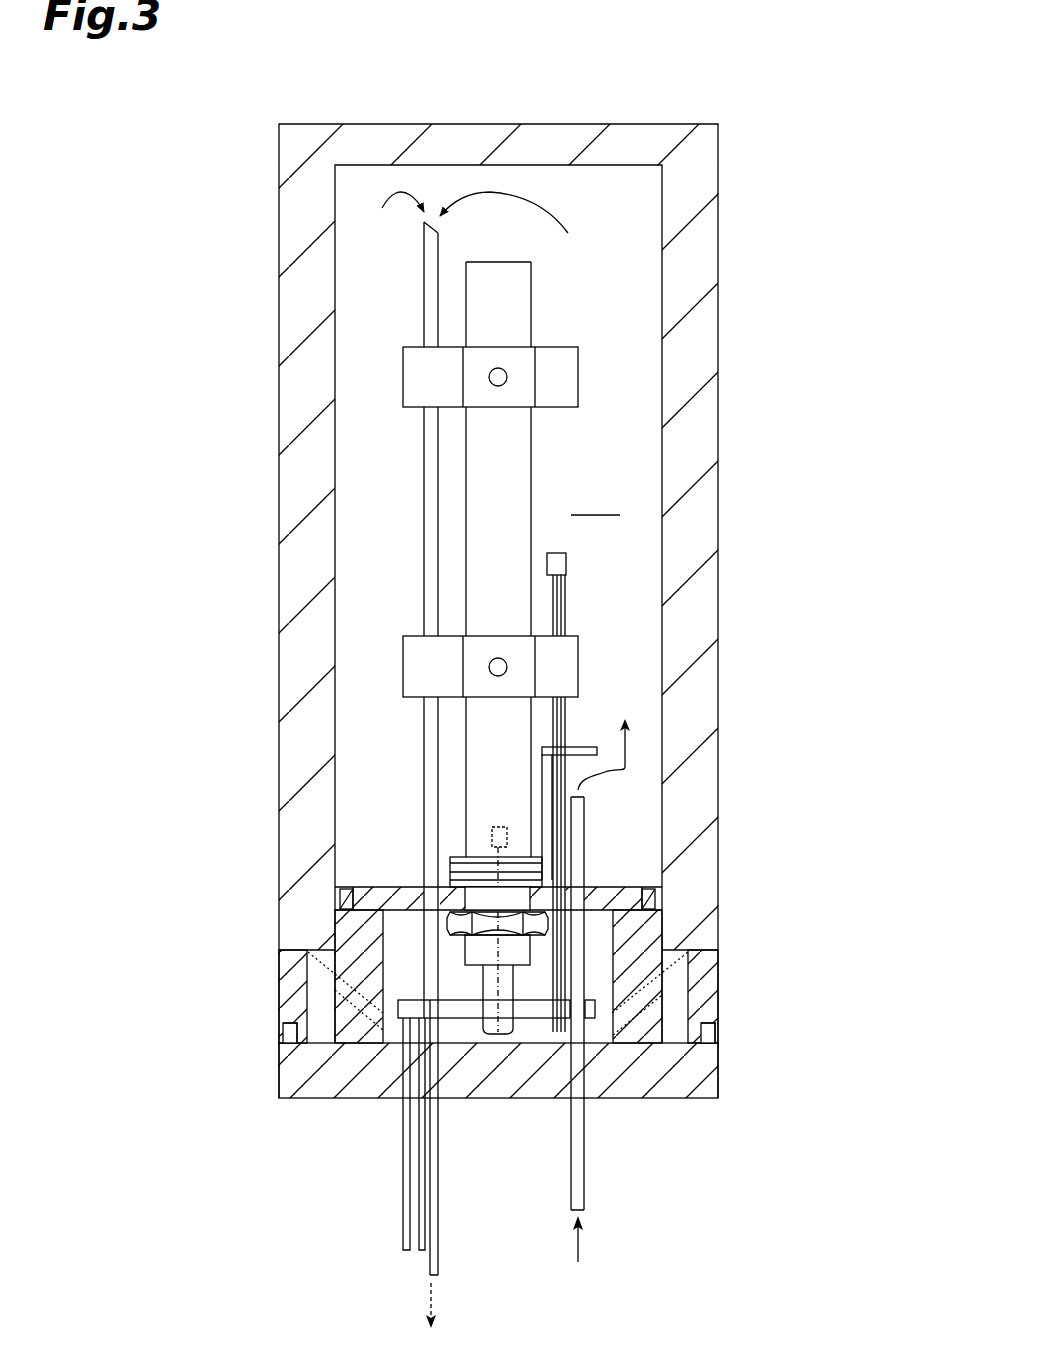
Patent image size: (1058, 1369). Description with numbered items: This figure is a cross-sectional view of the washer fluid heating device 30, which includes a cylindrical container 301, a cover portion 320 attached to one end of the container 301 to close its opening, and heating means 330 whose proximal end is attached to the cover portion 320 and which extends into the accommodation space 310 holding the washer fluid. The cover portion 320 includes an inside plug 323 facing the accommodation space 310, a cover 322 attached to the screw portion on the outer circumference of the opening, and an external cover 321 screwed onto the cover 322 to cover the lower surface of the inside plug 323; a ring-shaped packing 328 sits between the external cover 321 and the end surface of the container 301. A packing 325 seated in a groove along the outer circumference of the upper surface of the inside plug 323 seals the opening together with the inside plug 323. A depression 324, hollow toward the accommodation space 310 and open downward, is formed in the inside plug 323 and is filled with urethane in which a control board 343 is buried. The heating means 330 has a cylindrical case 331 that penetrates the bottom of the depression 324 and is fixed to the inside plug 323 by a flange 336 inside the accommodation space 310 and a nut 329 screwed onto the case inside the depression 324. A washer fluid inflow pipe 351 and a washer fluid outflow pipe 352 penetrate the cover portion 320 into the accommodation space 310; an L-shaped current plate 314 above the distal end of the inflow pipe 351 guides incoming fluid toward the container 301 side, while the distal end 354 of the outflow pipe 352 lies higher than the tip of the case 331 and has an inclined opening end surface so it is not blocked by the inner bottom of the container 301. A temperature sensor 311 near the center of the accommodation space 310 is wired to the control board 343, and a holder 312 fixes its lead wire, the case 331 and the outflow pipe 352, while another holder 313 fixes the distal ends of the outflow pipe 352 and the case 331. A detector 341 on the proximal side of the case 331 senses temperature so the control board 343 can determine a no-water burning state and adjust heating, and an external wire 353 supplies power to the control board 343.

The washer fluid heating device 30 is at (742, 65).
The container 301 is at (720, 213).
The accommodation space 310 is at (611, 647).
The temperature sensor 311 is at (567, 563).
The holder 312 is at (580, 662).
The holder 313 is at (580, 366).
The current plate 314 is at (582, 746).
The cover portion 320 is at (536, 955).
The external cover 321 is at (719, 1052).
The cover 322 is at (719, 973).
The inside plug 323 is at (655, 948).
The depression 324 is at (498, 879).
The packing 325 is at (350, 893).
The packing 328 is at (290, 1034).
The nut 329 is at (450, 920).
The heating means 330 is at (536, 302).
The case 331 is at (533, 462).
The flange 336 is at (450, 862).
The detector 341 is at (492, 836).
The control board 343 is at (398, 1012).
The washer fluid inflow pipe 351 is at (586, 817).
The washer fluid outflow pipe 352 is at (424, 782).
The external wire 353 is at (419, 1215).
The distal end 354 is at (424, 228).